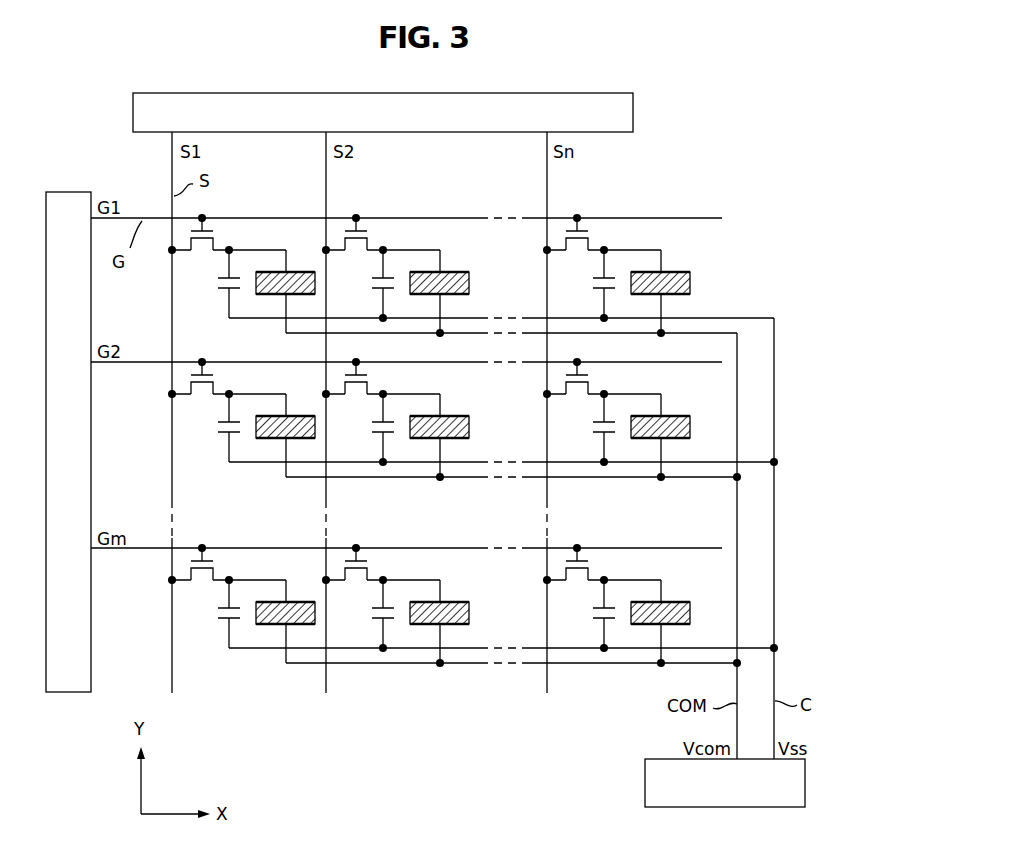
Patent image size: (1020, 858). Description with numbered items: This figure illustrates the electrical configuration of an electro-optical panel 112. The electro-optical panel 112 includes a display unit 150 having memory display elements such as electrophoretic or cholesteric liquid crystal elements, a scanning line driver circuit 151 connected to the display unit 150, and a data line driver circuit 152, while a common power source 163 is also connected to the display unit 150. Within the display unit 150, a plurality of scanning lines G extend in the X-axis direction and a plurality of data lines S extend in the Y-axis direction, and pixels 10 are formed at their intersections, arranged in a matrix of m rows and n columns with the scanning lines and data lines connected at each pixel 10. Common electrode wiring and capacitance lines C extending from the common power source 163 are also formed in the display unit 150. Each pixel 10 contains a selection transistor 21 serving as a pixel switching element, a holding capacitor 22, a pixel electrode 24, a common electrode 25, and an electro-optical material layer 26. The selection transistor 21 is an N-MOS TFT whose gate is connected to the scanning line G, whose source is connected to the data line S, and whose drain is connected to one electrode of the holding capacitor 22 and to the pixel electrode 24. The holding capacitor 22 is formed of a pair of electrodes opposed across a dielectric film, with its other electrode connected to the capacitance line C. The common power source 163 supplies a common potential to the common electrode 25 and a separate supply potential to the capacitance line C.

The electro-optical panel 112 is at (732, 110).
The display unit 150 is at (701, 195).
The scanning line driver circuit 151 is at (68, 192).
The data line driver circuit 152 is at (636, 112).
The common power source 163 is at (645, 783).
The pixel 10 is at (437, 411).
The selection transistor 21 is at (199, 244).
The holding capacitor 22 is at (215, 283).
The pixel electrode 24 is at (300, 272).
The common electrode 25 is at (264, 295).
The electro-optical material layer 26 is at (316, 283).